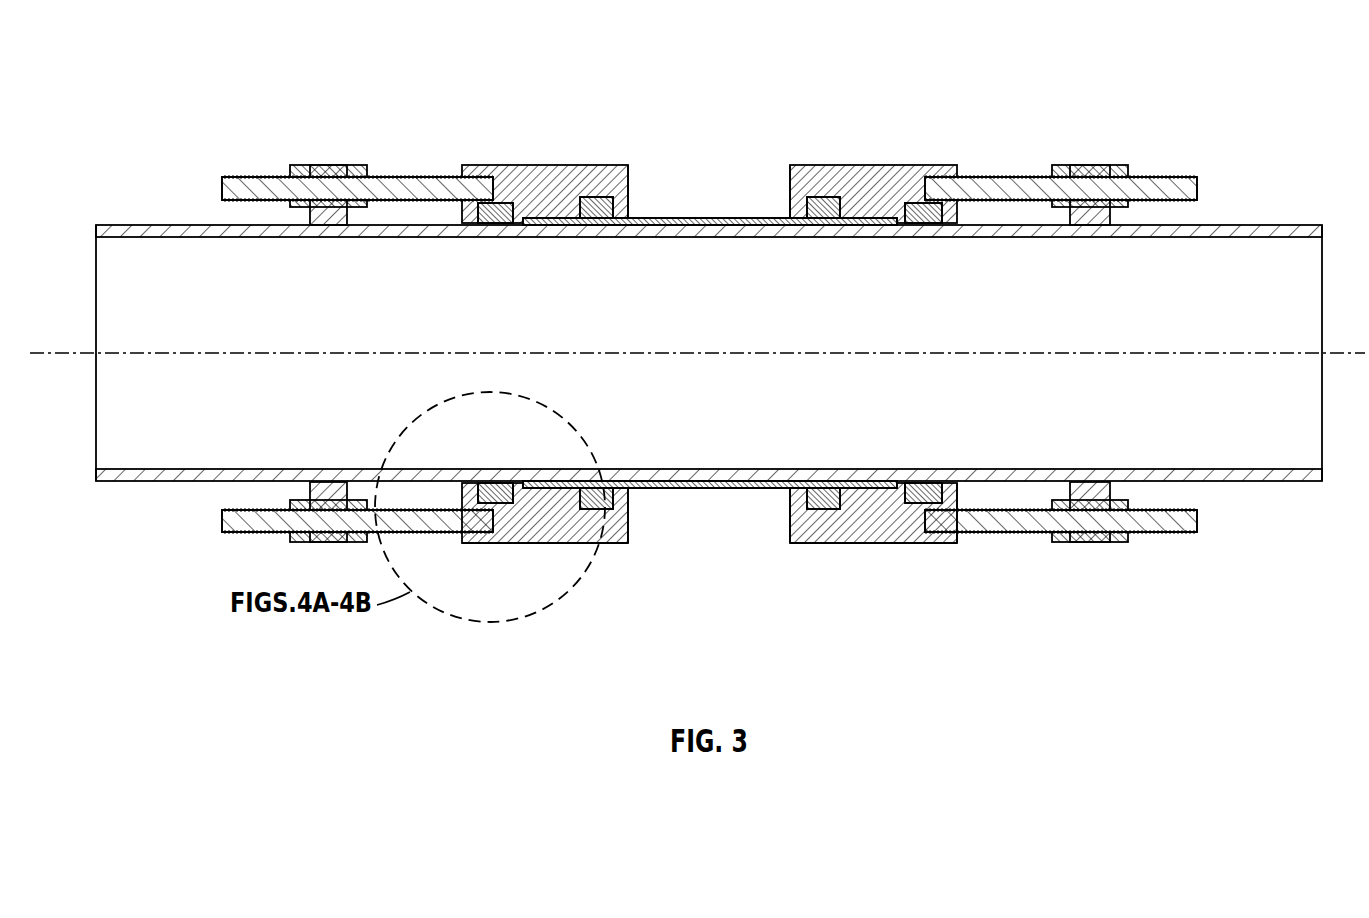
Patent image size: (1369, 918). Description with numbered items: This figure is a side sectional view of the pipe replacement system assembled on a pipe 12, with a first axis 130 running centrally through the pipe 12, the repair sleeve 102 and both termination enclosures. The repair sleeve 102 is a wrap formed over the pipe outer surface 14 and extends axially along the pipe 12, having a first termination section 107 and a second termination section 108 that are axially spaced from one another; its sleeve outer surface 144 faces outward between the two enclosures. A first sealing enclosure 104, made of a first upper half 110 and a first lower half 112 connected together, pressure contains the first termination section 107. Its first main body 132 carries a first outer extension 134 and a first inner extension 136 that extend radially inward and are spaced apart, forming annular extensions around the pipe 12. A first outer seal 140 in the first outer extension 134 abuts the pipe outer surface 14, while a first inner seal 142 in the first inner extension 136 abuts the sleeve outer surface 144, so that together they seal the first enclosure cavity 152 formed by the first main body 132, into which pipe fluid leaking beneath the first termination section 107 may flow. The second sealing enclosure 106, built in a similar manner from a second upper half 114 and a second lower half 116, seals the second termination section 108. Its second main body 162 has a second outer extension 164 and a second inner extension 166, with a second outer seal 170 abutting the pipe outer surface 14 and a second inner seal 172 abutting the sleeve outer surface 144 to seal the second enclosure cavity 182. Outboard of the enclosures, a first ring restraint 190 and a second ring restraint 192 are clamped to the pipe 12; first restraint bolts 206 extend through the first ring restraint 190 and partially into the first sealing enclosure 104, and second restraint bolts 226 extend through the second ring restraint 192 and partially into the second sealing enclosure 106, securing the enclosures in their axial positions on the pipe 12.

The pipe 12 is at (704, 315).
The pipe outer surface 14 is at (203, 224).
The repair sleeve 102 is at (711, 323).
The first sealing enclosure 104 is at (508, 158).
The second sealing enclosure 106 is at (820, 158).
The first termination section 107 is at (552, 218).
The second termination section 108 is at (887, 220).
The first upper half 110 is at (630, 527).
The first lower half 112 is at (630, 180).
The second upper half 114 is at (790, 520).
The second lower half 116 is at (790, 172).
The first axis 130 is at (52, 355).
The first main body 132 is at (578, 525).
The first outer extension 134 is at (478, 497).
The first inner extension 136 is at (643, 492).
The first outer seal 140 is at (486, 203).
The first inner seal 142 is at (597, 197).
The sleeve outer surface 144 is at (685, 218).
The first enclosure cavity 152 is at (533, 228).
The second main body 162 is at (860, 545).
The second outer extension 164 is at (950, 495).
The second inner extension 166 is at (797, 498).
The second outer seal 170 is at (928, 205).
The second inner seal 172 is at (830, 197).
The second enclosure cavity 182 is at (893, 220).
The first ring restraint 190 is at (328, 156).
The second ring restraint 192 is at (1096, 156).
The first restraint bolts 206 is at (266, 175).
The second restraint bolts 226 is at (1180, 175).